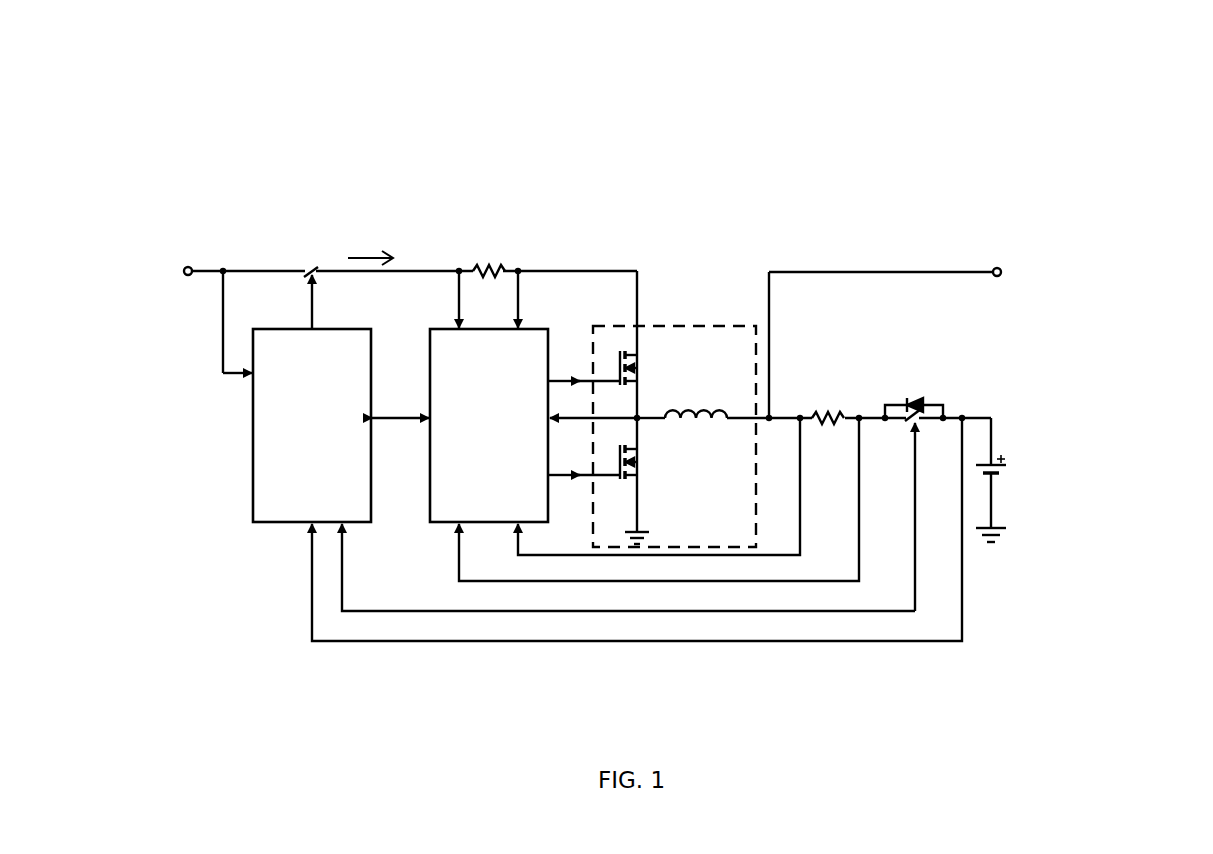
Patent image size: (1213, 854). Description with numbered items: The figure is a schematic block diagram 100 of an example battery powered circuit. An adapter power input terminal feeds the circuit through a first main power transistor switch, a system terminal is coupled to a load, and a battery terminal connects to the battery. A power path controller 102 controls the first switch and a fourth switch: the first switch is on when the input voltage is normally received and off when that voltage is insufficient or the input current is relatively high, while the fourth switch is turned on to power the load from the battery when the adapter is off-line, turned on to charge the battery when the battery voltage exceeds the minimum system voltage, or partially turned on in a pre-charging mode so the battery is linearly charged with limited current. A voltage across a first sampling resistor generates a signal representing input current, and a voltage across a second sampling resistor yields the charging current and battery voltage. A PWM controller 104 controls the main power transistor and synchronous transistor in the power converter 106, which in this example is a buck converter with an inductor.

The schematic block diagram 100 is at (1088, 96).
The power path controller 102 is at (312, 425).
The PWM controller 104 is at (489, 425).
The power converter 106 is at (674, 436).